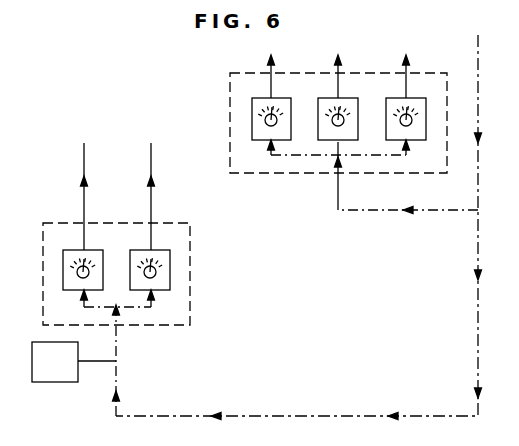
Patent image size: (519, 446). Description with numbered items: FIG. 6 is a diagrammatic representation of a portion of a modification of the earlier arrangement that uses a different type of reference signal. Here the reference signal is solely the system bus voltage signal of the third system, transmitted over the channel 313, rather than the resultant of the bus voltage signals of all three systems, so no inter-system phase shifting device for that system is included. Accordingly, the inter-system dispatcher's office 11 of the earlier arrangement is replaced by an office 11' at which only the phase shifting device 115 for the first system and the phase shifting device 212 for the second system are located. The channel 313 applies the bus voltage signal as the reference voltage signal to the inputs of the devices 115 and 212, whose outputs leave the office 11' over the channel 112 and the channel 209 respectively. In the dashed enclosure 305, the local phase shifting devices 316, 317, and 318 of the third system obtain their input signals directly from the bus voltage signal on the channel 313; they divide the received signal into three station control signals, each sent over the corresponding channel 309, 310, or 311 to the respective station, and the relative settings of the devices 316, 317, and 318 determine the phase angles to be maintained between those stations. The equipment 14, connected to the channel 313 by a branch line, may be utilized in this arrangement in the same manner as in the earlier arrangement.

The local dispatcher's office 305 is at (268, 173).
The local phase shifting device 316 is at (288, 85).
The local phase shifting device 317 is at (355, 85).
The local phase shifting device 318 is at (438, 98).
The channel 309 is at (271, 37).
The channel 310 is at (338, 37).
The channel 311 is at (406, 37).
The inter-system dispatcher's office 11 is at (428, 209).
The channel 313 is at (478, 77).
The office 11' is at (141, 274).
The phase shifting device 115 is at (97, 237).
The phase shifting device 212 is at (181, 248).
The channel 112 is at (84, 153).
The channel 209 is at (151, 153).
The equipment 14 is at (62, 382).